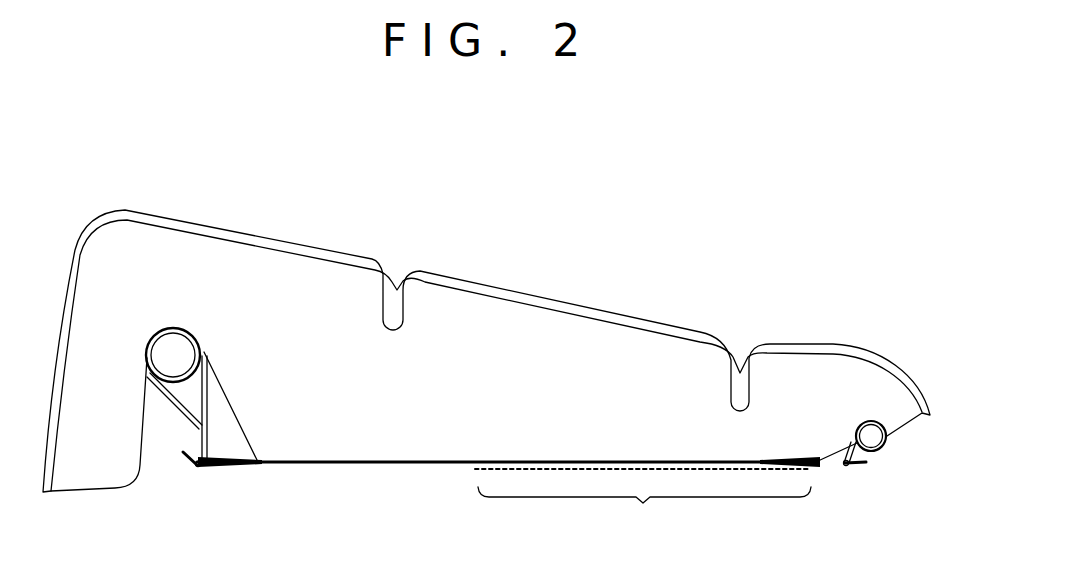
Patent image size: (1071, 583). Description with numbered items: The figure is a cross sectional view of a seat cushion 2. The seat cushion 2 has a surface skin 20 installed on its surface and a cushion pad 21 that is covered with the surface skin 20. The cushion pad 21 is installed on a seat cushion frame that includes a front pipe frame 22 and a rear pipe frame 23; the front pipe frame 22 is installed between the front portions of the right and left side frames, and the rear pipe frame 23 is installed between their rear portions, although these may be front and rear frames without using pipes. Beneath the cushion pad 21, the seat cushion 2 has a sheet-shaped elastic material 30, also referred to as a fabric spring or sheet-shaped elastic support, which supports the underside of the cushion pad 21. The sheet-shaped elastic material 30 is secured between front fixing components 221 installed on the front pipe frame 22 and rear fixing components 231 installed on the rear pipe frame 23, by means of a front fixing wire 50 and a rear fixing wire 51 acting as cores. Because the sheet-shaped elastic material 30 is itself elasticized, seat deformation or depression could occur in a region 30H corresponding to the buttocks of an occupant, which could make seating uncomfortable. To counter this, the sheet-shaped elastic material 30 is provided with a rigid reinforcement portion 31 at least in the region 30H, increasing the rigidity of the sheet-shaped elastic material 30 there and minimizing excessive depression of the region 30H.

The seat cushion 2 is at (493, 142).
The surface skin 20 is at (486, 351).
The cushion pad 21 is at (537, 323).
The front pipe frame 22 is at (173, 342).
The front fixing components 221 is at (208, 392).
The rear pipe frame 23 is at (872, 434).
The rear fixing components 231 is at (840, 447).
The sheet-shaped elastic material 30 is at (345, 466).
The region 30H is at (644, 514).
The rigid reinforcement portion 31 is at (528, 472).
The front fixing wire 50 is at (198, 468).
The rear fixing wire 51 is at (850, 468).